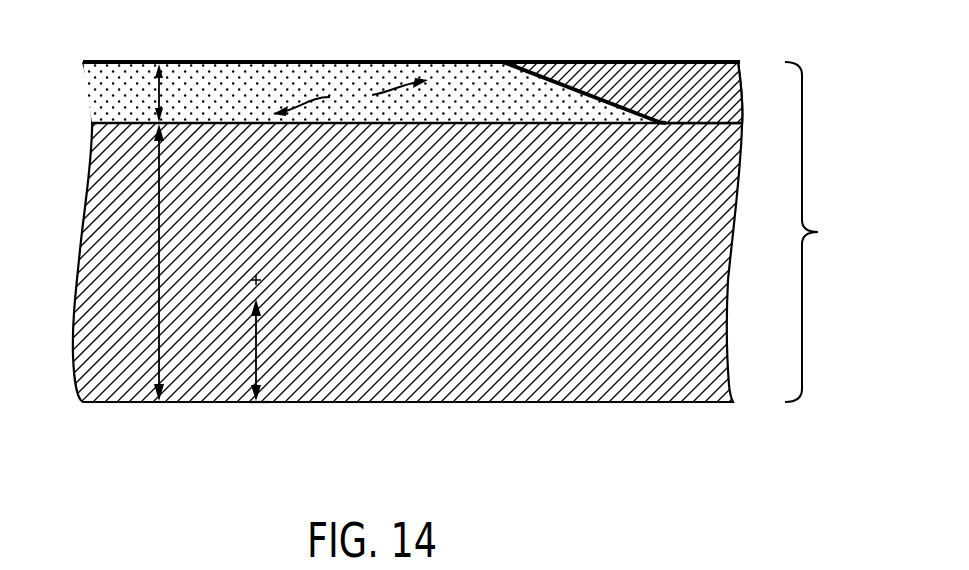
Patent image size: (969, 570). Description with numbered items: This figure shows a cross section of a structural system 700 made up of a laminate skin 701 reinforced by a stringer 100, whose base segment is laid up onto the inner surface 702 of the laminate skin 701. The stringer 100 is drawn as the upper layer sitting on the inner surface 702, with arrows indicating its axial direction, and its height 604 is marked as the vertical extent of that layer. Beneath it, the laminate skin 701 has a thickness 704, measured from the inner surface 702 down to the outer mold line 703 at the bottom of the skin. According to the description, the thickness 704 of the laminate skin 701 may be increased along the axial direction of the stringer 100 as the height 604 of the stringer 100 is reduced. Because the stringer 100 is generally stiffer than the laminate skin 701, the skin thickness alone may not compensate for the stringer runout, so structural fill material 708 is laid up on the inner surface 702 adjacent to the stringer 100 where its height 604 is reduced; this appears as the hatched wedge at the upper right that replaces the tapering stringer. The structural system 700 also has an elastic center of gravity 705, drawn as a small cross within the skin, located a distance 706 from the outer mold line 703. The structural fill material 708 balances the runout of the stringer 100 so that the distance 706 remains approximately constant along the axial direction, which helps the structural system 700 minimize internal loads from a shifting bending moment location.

The structural system 700 is at (820, 232).
The laminate skin 701 is at (585, 380).
The inner surface 702 is at (463, 123).
The outer mold line 703 is at (260, 403).
The thickness 704 is at (159, 208).
The elastic center of gravity 705 is at (261, 278).
The distance 706 is at (256, 358).
The structural fill material 708 is at (683, 102).
The height 604 is at (159, 92).
The stringer 100 is at (350, 97).